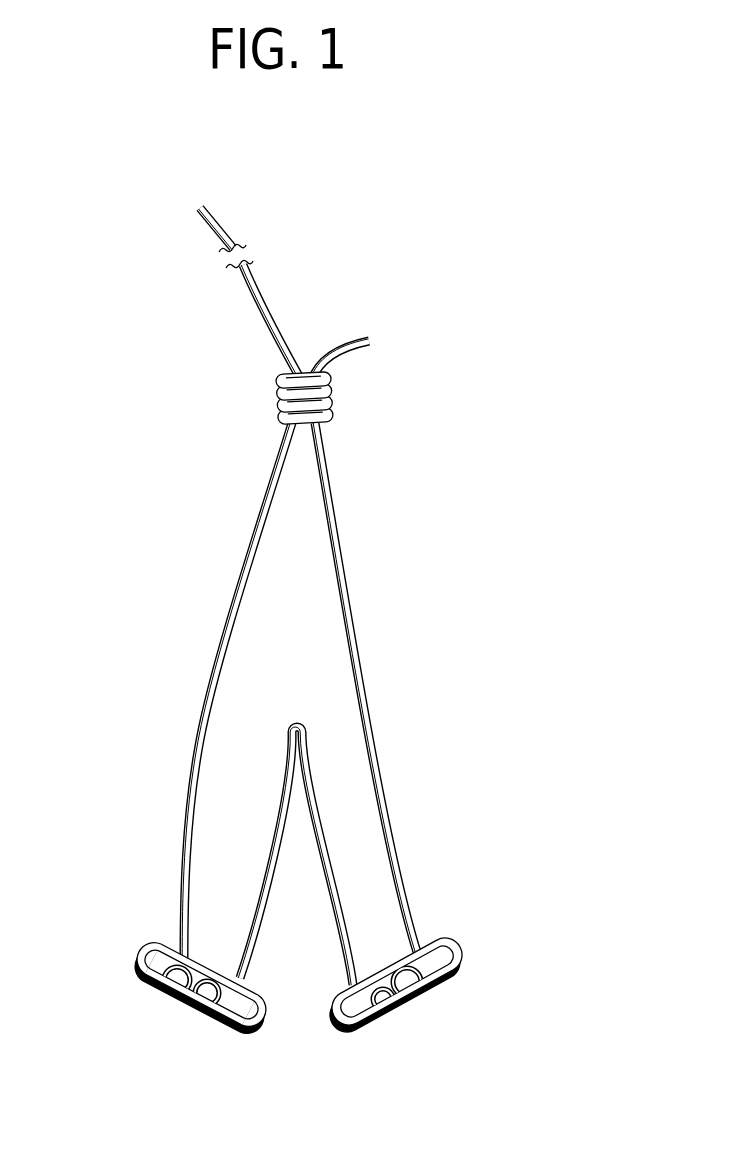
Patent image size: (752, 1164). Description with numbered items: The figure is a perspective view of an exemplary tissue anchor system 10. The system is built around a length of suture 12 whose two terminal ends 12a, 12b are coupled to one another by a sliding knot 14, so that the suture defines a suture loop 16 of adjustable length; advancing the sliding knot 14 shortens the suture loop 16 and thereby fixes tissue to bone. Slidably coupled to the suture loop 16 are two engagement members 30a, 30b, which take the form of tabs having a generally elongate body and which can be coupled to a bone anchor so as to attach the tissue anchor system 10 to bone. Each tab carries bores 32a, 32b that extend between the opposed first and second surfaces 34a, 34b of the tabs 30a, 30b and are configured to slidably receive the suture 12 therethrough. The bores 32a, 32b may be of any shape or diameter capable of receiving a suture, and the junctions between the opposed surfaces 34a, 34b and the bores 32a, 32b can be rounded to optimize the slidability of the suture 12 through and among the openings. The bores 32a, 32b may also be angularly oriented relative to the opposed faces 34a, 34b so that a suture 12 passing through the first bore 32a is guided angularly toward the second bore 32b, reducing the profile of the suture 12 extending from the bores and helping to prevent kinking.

The tissue anchor system 10 is at (334, 642).
The suture 12 is at (315, 282).
The terminal end of suture 12a is at (221, 227).
The terminal end of suture 12b is at (343, 361).
The sliding knot 14 is at (277, 403).
The suture loop 16 is at (390, 720).
The engagement member 30a is at (176, 1035).
The engagement member 30b is at (387, 1045).
The first bore 32a is at (165, 993).
The second bore 32b is at (210, 1012).
The first surface 34a is at (248, 984).
The second surface 34b is at (140, 980).